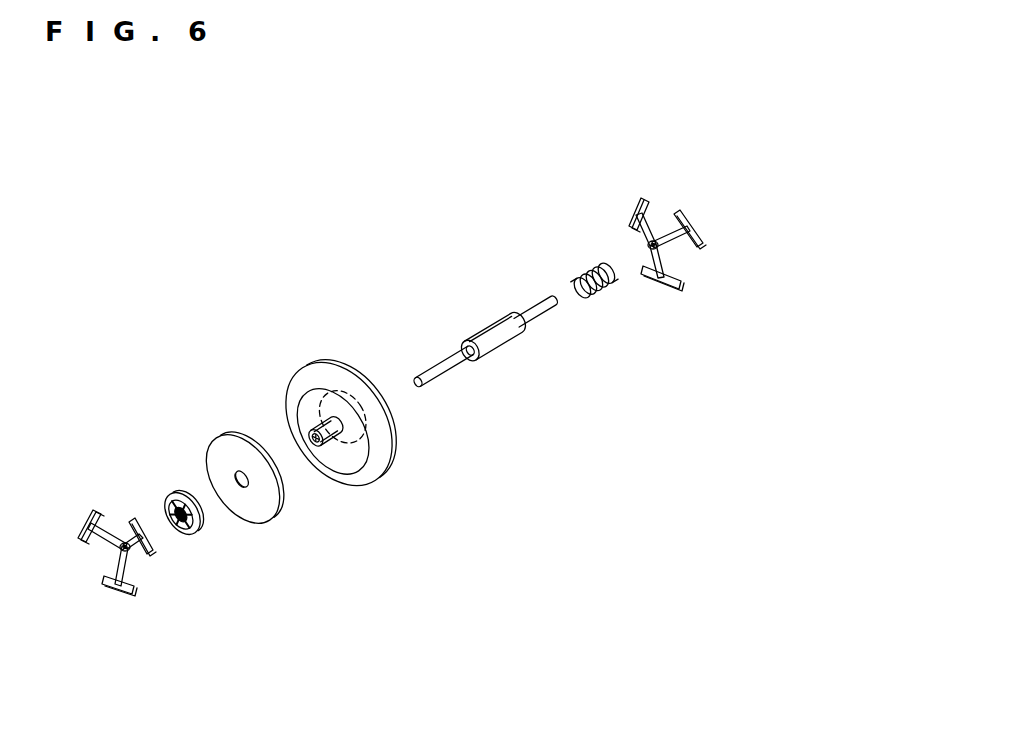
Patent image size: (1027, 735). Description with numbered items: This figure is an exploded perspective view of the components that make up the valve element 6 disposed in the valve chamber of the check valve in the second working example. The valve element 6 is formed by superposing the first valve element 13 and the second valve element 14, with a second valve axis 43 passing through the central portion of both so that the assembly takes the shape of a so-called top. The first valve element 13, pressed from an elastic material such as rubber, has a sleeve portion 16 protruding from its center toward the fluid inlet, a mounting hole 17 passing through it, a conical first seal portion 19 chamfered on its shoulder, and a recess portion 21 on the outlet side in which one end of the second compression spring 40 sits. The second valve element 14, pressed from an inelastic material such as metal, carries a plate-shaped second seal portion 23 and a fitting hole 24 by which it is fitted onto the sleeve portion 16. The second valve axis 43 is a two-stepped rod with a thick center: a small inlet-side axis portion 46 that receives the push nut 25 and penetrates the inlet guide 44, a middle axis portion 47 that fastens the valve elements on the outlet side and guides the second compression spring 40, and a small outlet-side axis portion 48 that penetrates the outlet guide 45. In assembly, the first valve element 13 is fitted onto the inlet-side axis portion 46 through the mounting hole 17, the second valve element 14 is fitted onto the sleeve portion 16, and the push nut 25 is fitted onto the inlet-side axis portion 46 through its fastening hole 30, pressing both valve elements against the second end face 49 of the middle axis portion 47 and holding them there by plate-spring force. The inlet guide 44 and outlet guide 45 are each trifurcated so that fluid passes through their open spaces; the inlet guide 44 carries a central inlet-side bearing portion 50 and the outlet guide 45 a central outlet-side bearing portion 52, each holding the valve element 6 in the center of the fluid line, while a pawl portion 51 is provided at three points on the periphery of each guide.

The valve element 6 is at (273, 177).
The first valve element 13 is at (333, 318).
The second valve element 14 is at (228, 390).
The sleeve portion 16 is at (340, 430).
The mounting hole 17 is at (309, 443).
The first seal portion 19 is at (313, 380).
The recess portion 21 is at (398, 447).
The second seal portion 23 is at (223, 460).
The fitting hole 24 is at (242, 488).
The push nut 25 is at (173, 495).
The fastening hole 30 is at (177, 528).
The second compression spring 40 is at (600, 256).
The second valve axis 43 is at (467, 245).
The inlet guide 44 is at (78, 478).
The outlet guide 45 is at (686, 165).
The inlet-side axis portion 46 is at (440, 365).
The middle axis portion 47 is at (490, 320).
The outlet-side axis portion 48 is at (535, 303).
The second end face 49 is at (480, 357).
The inlet-side bearing portion 50 is at (120, 550).
The pawl portion 51 is at (125, 597).
The outlet-side bearing portion 52 is at (638, 258).